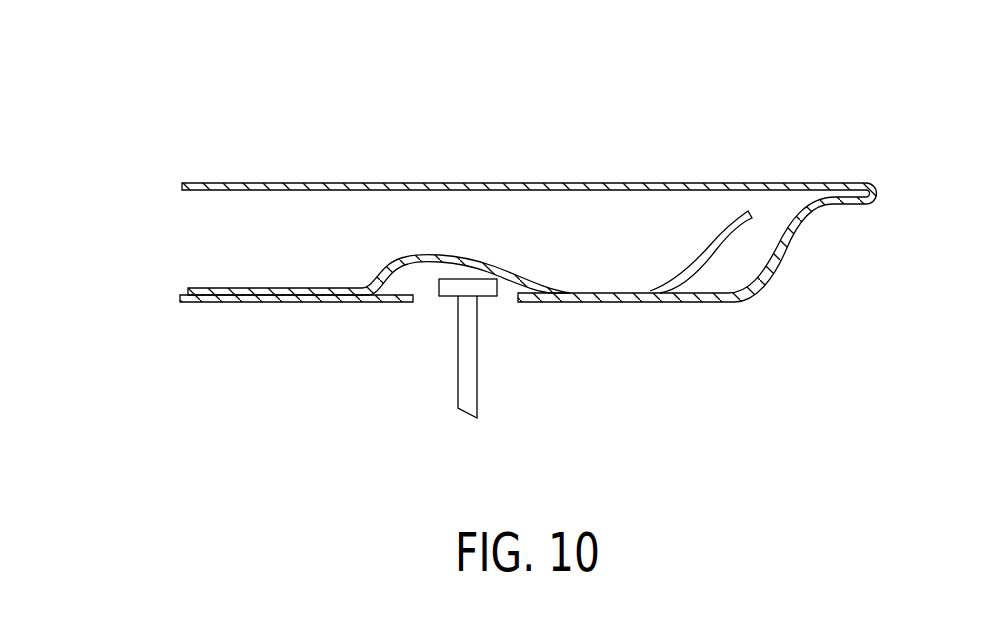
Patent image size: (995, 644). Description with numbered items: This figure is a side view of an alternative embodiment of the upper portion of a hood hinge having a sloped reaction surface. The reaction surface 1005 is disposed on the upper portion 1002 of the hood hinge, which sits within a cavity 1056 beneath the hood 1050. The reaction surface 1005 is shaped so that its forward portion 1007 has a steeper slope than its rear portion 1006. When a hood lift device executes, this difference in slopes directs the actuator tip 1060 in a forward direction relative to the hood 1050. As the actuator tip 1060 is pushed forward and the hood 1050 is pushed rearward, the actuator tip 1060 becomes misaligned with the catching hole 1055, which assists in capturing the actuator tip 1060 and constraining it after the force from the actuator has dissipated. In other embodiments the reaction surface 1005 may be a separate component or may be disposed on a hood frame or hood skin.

The hood 1050 is at (758, 129).
The cavity 1056 is at (205, 239).
The upper portion 1002 is at (687, 276).
The catching hole 1055 is at (428, 298).
The actuator tip 1060 is at (482, 292).
The reaction surface 1005 is at (470, 262).
The rear portion 1006 is at (512, 274).
The forward portion 1007 is at (392, 267).